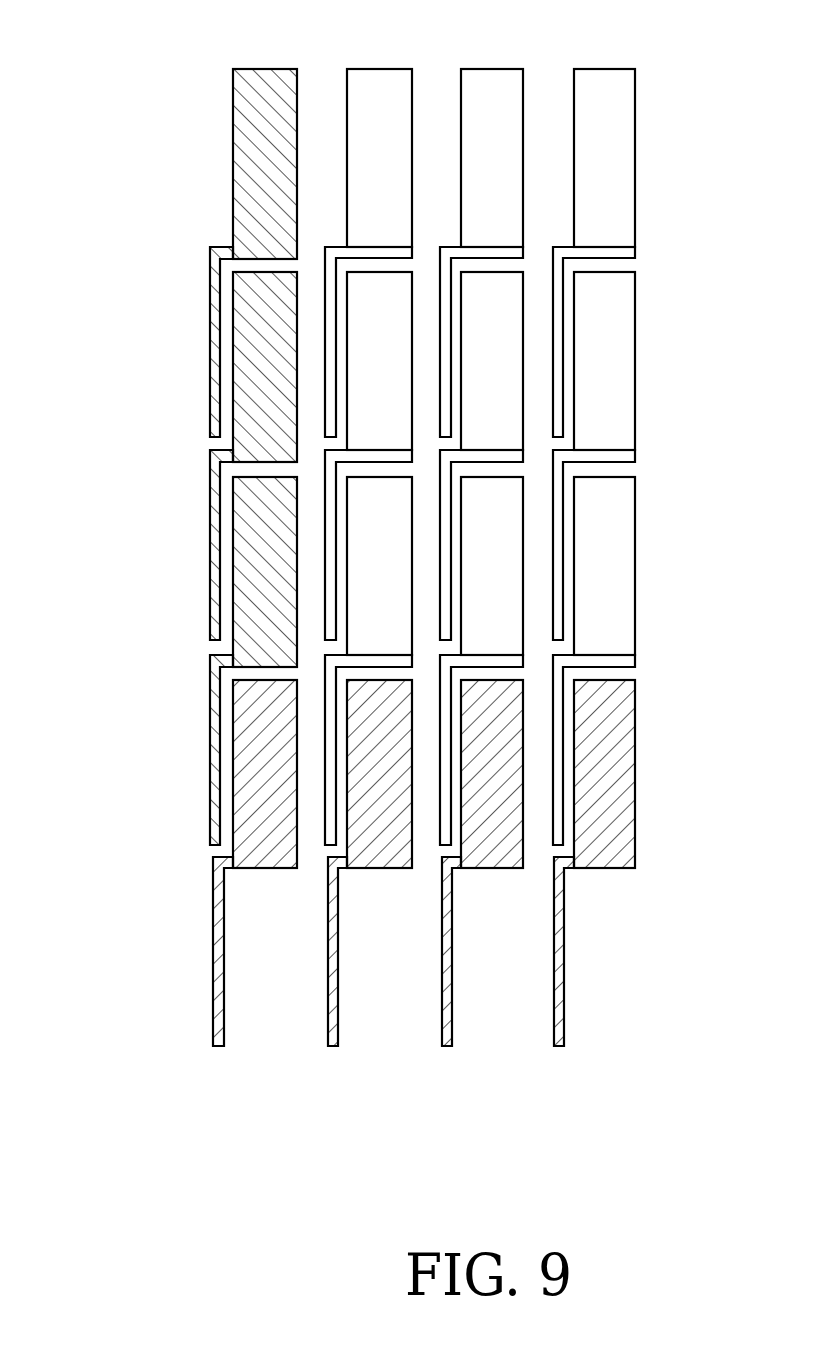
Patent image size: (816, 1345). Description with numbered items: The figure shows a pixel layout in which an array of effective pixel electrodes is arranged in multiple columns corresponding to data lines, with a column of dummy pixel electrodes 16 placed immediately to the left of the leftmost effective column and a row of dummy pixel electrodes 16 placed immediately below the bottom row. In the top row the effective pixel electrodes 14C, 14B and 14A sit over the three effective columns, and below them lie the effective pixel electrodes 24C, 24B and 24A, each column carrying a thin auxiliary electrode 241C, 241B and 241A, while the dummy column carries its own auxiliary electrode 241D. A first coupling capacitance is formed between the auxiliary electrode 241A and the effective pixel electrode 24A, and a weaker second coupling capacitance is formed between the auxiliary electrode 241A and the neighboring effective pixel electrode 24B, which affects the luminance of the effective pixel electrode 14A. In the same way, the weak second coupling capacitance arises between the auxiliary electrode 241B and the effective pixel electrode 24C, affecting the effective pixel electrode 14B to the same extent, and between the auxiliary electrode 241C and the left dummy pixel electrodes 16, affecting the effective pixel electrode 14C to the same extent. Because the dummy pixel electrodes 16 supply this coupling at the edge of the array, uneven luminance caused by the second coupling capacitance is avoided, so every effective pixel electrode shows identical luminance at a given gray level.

The dummy pixel electrode 16 is at (258, 123).
The effective pixel electrode 14A is at (600, 123).
The effective pixel electrode 14B is at (483, 123).
The effective pixel electrode 14C is at (368, 122).
The effective pixel electrode 24A is at (602, 335).
The effective pixel electrode 24B is at (485, 335).
The effective pixel electrode 24C is at (368, 335).
The auxiliary electrode 241A is at (558, 382).
The auxiliary electrode 241B is at (447, 382).
The auxiliary electrode 241C is at (330, 383).
The auxiliary electrode 241D is at (217, 367).